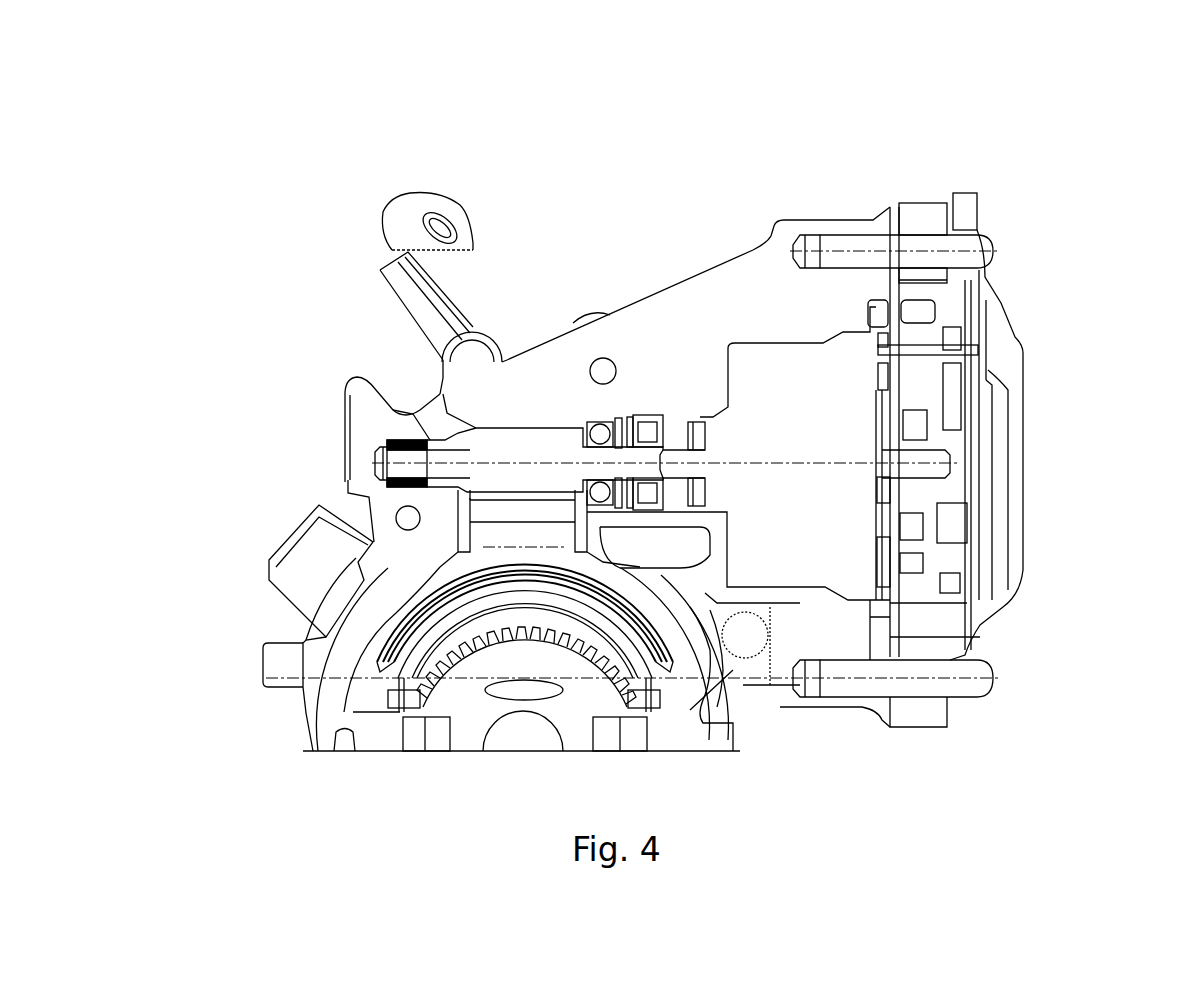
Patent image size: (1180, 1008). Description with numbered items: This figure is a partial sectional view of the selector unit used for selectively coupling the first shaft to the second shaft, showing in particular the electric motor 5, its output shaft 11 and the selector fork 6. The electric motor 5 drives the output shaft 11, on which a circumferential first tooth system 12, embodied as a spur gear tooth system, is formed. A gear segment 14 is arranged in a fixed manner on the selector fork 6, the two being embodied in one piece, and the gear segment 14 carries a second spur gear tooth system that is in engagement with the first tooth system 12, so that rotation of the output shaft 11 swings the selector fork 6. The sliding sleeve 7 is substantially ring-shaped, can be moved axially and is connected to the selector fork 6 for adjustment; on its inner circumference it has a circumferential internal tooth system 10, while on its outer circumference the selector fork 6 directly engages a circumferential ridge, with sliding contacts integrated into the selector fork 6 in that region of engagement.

The electric motor 5 is at (1035, 372).
The selector fork 6 is at (737, 677).
The sliding sleeve 7 is at (708, 665).
The internal tooth system 10 is at (645, 658).
The output shaft 11 is at (395, 440).
The first tooth system 12 is at (521, 428).
The gear segment 14 is at (490, 527).